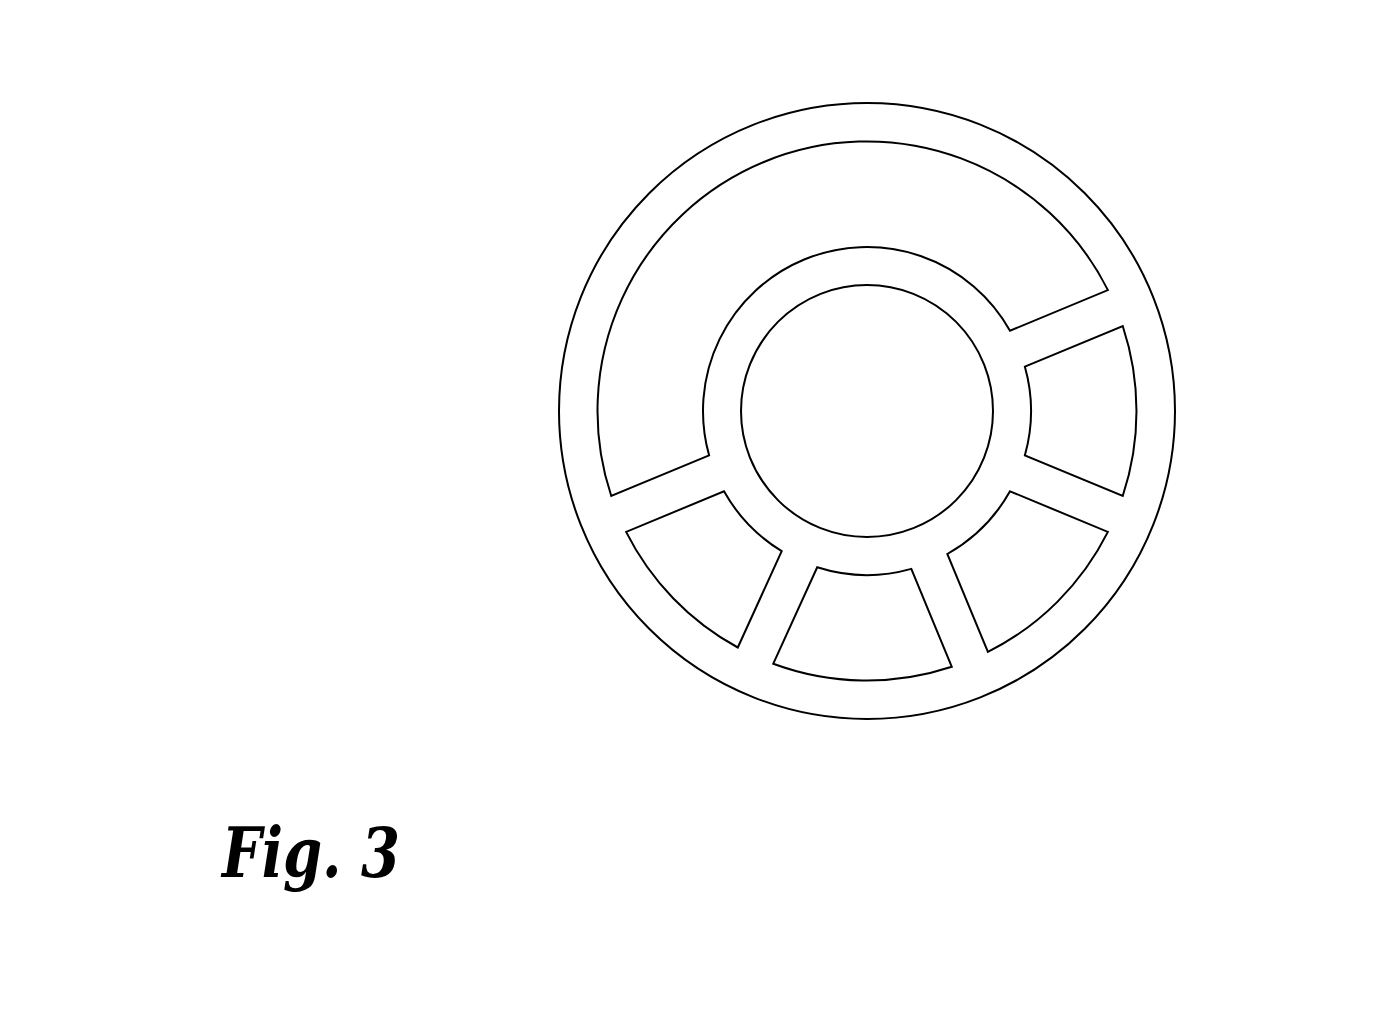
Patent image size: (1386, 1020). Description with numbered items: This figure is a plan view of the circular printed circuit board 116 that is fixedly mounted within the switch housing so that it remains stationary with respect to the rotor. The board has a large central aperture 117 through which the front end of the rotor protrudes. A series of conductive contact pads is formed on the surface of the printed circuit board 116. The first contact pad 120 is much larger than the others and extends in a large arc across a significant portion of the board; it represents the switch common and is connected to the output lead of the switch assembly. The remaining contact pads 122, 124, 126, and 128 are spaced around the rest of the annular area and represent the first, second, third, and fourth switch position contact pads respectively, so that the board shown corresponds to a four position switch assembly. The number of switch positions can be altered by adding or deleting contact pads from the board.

The printed circuit board 116 is at (585, 283).
The central aperture 117 is at (880, 393).
The first contact pad 120 is at (982, 217).
The first switch position contact pad 122 is at (1090, 390).
The second switch position contact pad 124 is at (1037, 565).
The third switch position contact pad 126 is at (872, 641).
The fourth switch position contact pad 128 is at (712, 572).